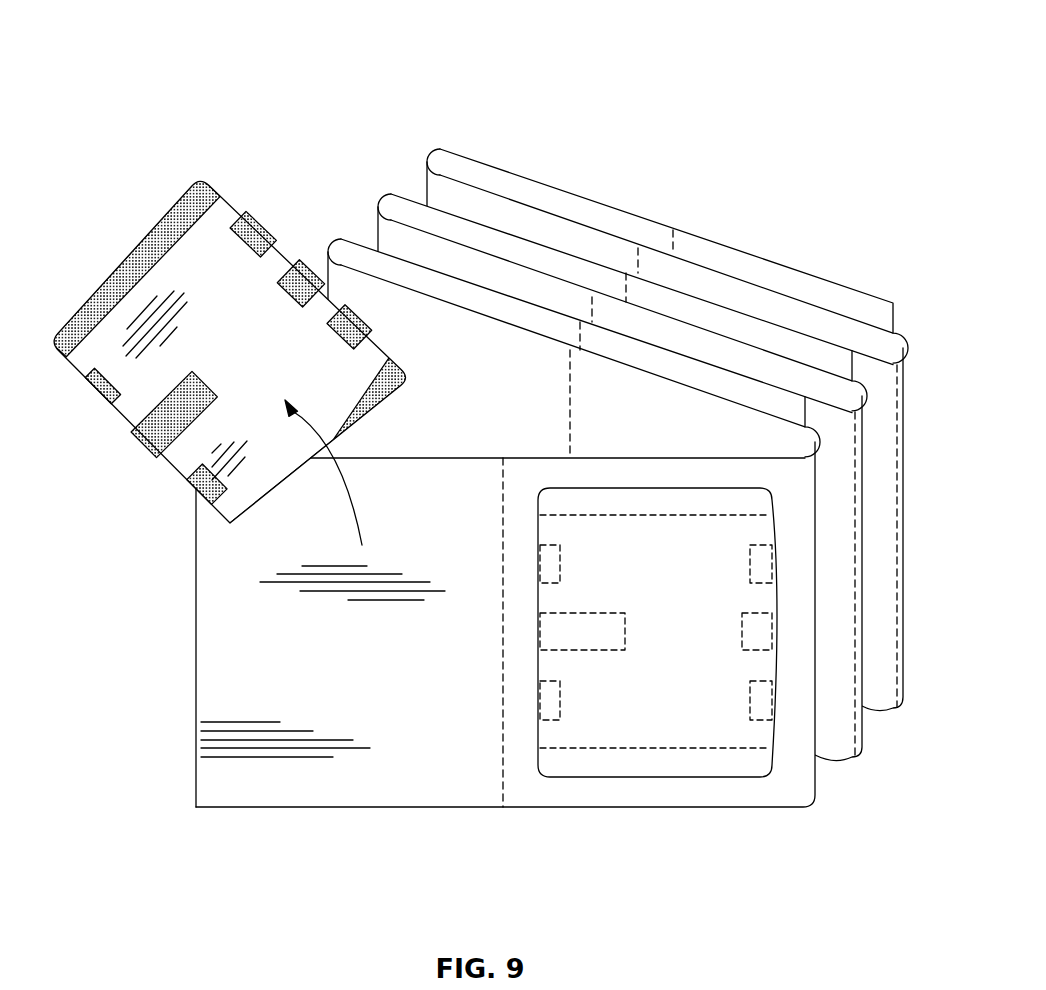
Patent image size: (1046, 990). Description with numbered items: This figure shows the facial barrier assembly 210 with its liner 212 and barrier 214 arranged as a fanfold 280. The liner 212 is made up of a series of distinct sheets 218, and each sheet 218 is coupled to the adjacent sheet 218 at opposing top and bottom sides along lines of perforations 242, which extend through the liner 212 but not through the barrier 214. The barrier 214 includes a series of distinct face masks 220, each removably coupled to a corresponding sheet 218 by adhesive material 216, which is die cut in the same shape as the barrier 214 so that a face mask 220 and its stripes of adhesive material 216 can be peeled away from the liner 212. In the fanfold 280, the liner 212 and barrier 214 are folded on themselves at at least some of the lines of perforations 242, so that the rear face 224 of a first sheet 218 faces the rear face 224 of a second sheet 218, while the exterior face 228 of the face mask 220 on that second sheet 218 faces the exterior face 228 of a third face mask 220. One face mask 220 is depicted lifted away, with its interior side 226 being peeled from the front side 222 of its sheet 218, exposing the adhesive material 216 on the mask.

The facial barrier assembly 210 is at (529, 467).
The liner 212 is at (250, 692).
The barrier 214 is at (657, 685).
The adhesive material 216 is at (156, 430).
The sheet 218 is at (733, 433).
The face mask 220 is at (205, 240).
The front side 222 is at (393, 733).
The rear face 224 is at (672, 417).
The interior side 226 is at (179, 282).
The exterior face 228 is at (610, 720).
The lines of perforations 242 is at (673, 250).
The fanfold 280 is at (225, 300).